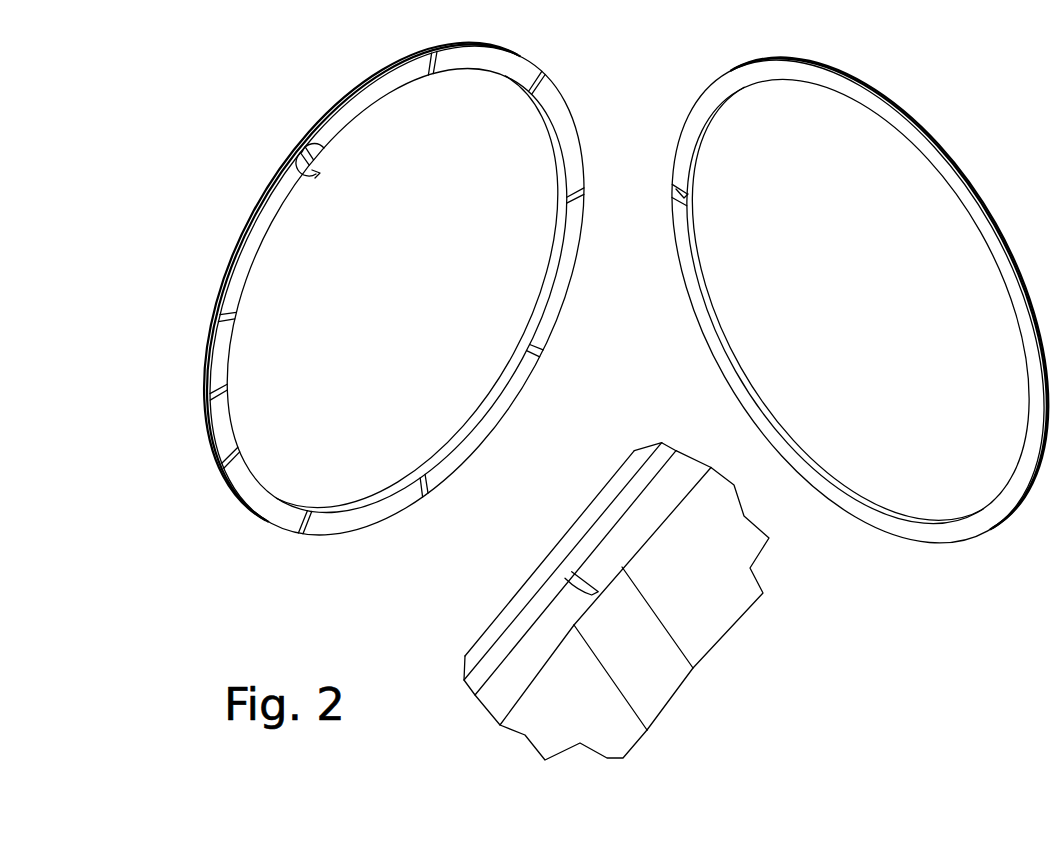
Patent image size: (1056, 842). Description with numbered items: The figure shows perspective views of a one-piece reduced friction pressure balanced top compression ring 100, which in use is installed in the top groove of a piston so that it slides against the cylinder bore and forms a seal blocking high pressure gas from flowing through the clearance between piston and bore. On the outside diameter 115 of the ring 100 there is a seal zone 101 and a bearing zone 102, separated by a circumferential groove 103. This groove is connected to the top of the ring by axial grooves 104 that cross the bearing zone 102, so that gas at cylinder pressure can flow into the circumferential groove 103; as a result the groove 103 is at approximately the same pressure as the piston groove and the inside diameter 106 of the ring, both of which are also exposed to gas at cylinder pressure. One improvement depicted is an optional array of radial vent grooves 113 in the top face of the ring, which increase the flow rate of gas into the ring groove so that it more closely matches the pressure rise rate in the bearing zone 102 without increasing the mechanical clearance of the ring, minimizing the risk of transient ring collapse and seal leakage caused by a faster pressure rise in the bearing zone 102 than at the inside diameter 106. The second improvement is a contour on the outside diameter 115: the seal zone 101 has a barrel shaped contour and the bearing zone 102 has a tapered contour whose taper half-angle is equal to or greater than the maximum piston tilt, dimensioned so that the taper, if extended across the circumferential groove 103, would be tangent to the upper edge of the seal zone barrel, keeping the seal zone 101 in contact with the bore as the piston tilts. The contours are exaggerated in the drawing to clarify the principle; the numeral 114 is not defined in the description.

The ring 100 is at (594, 303).
The inside diameter 106 is at (540, 307).
The ring front surface with notches 114 is at (557, 108).
The seal zone 101 is at (578, 528).
The bearing zone 102 is at (665, 488).
The circumferential groove 103 is at (661, 467).
The axial grooves 104 is at (578, 582).
The radial vent grooves 113 is at (656, 667).
The outside diameter 115 is at (510, 688).